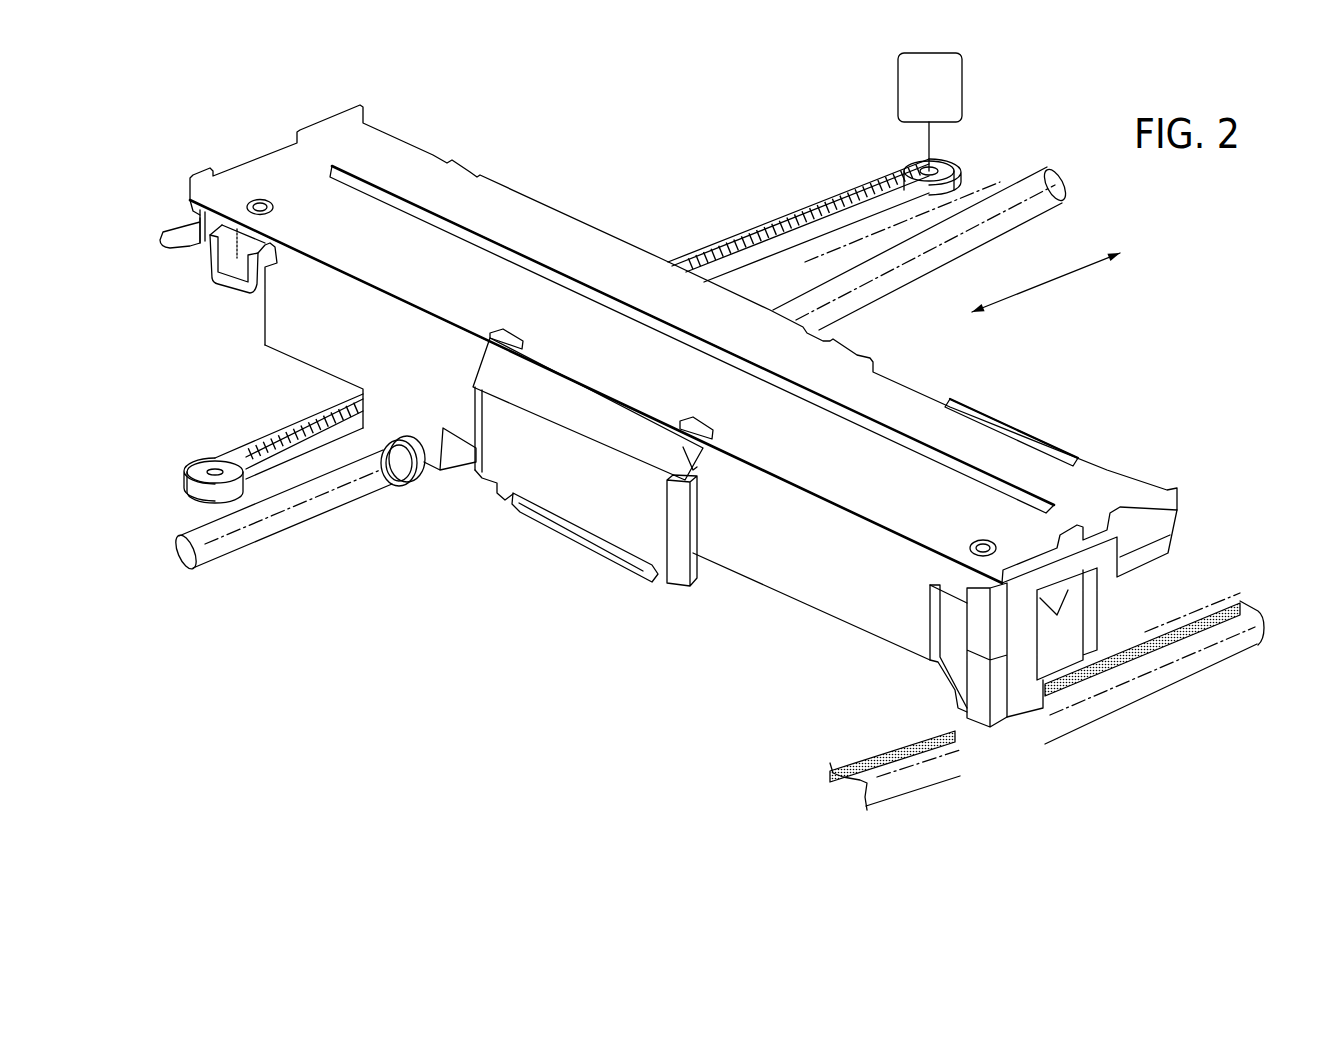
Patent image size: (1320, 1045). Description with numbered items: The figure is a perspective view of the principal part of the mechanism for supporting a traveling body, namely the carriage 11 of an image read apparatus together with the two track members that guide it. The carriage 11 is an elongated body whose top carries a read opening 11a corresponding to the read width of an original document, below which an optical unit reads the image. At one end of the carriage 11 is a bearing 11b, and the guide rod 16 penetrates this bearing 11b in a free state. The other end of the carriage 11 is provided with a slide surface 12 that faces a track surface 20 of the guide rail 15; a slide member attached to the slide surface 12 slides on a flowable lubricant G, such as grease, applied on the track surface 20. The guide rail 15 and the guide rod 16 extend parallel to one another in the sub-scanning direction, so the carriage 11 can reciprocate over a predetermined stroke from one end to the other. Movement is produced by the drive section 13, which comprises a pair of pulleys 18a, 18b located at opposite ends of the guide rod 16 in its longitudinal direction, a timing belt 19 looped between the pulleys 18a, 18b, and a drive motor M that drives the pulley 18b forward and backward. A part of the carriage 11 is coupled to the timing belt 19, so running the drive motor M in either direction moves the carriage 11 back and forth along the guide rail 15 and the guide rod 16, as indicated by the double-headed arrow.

The carriage 11 is at (533, 121).
The read opening 11a is at (553, 272).
The bearing 11b is at (403, 488).
The slide surface 12 is at (978, 727).
The drive section 13 is at (595, 276).
The guide rail 15 is at (1252, 650).
The guide rod 16 is at (248, 544).
The pulley 18a is at (207, 461).
The pulley 18b is at (949, 160).
The timing belt 19 is at (772, 214).
The track surface 20 is at (862, 760).
The drive motor M is at (962, 90).
The lubricant G is at (1170, 648).